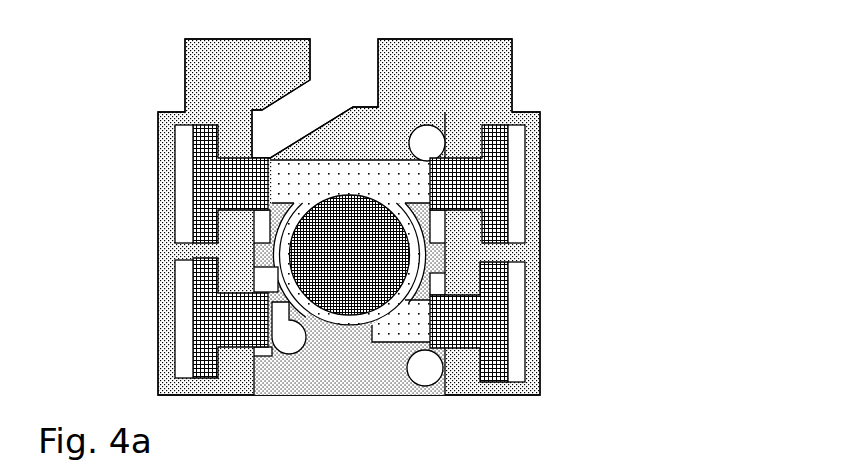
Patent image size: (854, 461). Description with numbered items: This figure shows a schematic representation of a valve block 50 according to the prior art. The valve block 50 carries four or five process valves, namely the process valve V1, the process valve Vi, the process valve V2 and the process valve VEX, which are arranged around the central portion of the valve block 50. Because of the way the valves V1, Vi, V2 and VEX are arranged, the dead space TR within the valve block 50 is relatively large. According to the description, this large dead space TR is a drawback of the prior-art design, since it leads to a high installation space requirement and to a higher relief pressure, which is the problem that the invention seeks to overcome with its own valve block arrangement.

The valve block 50 is at (502, 29).
The process valve VEX is at (205, 178).
The process valve V1 is at (205, 312).
The process valve V2 is at (500, 181).
The process valve Vi is at (500, 322).
The dead space TR is at (403, 335).